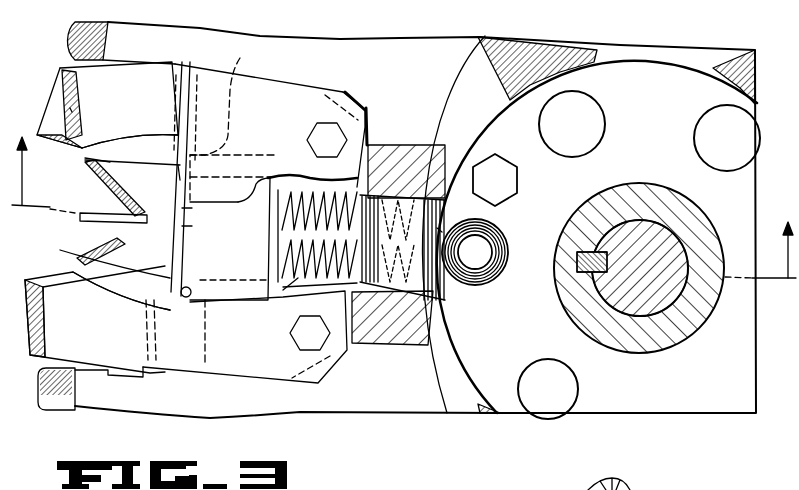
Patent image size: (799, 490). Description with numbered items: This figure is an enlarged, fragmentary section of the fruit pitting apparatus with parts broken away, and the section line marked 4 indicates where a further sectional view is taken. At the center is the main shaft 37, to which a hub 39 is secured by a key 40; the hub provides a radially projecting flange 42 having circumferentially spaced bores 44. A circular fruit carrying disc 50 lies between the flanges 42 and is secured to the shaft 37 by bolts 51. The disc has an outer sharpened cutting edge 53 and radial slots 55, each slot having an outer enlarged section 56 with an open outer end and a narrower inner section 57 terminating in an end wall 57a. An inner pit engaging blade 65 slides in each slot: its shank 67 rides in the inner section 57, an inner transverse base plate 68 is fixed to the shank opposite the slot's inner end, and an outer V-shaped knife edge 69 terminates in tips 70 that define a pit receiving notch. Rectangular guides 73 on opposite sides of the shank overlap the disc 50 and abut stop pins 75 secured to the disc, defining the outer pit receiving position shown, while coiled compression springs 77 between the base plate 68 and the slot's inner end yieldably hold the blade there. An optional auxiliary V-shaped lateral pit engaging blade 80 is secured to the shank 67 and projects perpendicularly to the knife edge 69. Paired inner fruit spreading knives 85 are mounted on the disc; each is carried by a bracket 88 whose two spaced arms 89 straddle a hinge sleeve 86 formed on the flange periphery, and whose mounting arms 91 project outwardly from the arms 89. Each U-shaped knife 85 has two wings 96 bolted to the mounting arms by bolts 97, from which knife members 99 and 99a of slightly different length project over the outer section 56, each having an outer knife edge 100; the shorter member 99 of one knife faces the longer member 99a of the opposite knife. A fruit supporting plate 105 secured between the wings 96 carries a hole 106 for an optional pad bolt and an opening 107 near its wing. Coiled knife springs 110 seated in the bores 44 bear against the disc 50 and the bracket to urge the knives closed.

The main shaft 37 is at (640, 228).
The hub 39 is at (648, 335).
The key 40 is at (578, 262).
The flange 42 is at (533, 344).
The aligned bores 44 is at (580, 106).
The fruit carrying disc 50 is at (383, 411).
The bolts 51 is at (498, 165).
The sharpened cutting edge 53 is at (78, 38).
The slot 55 is at (170, 145).
The outer enlarged section 56 is at (118, 62).
The inner section 57 is at (300, 278).
The end wall 57a is at (438, 228).
The inner pit engaging blade 65 is at (135, 266).
The shank 67 is at (168, 204).
The inner transverse base plate 68 is at (262, 232).
The outer V-shaped knife edge 69 is at (117, 196).
The tips 70 is at (85, 158).
The rectangular guides 73 is at (250, 279).
The stop pins 75 is at (182, 322).
The coiled compression springs 77 is at (315, 205).
The auxiliary V-shaped lateral pit engaging blade 80 is at (106, 219).
The inner fruit spreading knife 85 is at (253, 88).
The hinge sleeve 86 is at (715, 70).
The bracket 88 is at (372, 126).
The arms 89 is at (395, 162).
The mounting arms 91 is at (185, 388).
The wings 96 is at (276, 105).
The bolts 97 is at (310, 140).
The shorter knife member 99 is at (145, 104).
The longer knife member 99a is at (60, 70).
The outer knife edge 100 is at (70, 108).
The fruit supporting plate 105 is at (180, 180).
The hole 106 is at (188, 228).
The opening 107 is at (188, 211).
The coiled knife springs 110 is at (492, 248).
The section line 4- 4 is at (404, 207).